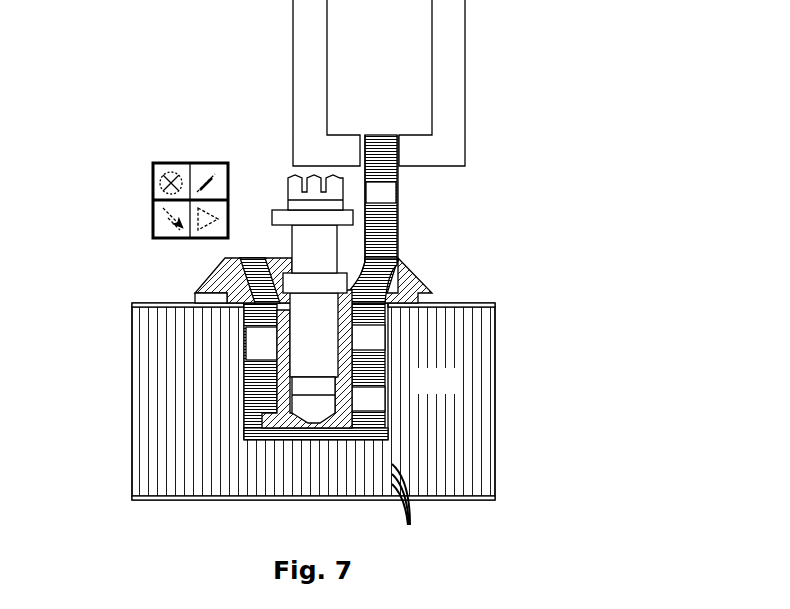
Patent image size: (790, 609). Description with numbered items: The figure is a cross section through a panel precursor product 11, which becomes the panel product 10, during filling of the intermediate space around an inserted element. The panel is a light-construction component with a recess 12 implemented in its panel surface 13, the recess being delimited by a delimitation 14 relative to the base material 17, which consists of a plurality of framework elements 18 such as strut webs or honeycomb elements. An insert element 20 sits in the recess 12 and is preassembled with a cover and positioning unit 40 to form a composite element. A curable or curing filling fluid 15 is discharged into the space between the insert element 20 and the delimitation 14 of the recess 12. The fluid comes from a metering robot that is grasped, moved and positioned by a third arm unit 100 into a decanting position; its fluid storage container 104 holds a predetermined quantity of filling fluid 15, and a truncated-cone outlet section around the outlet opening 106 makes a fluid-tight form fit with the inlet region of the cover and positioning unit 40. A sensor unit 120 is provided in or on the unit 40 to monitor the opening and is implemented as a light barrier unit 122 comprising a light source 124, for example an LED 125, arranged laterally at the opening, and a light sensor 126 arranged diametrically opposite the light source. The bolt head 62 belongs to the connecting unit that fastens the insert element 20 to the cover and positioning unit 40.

The panel product 10 is at (359, 402).
The panel precursor product 11 is at (472, 501).
The recess 12 is at (383, 409).
The panel surface 13 is at (483, 304).
The delimitation 14 is at (242, 414).
The filling fluid 15 is at (395, 203).
The base material 17 is at (451, 390).
The framework elements 18 is at (406, 508).
The insert element 20 is at (416, 276).
The cover and positioning unit 40 is at (361, 264).
The bolt head 62 is at (280, 236).
The third arm unit 100 is at (440, 131).
The fluid storage container 104 is at (400, 212).
The outlet opening 106 is at (378, 270).
The sensor unit 120 is at (154, 169).
The light barrier unit 122 is at (214, 152).
The light source 124 is at (171, 183).
The LED 125 is at (152, 184).
The light sensor 126 is at (152, 220).